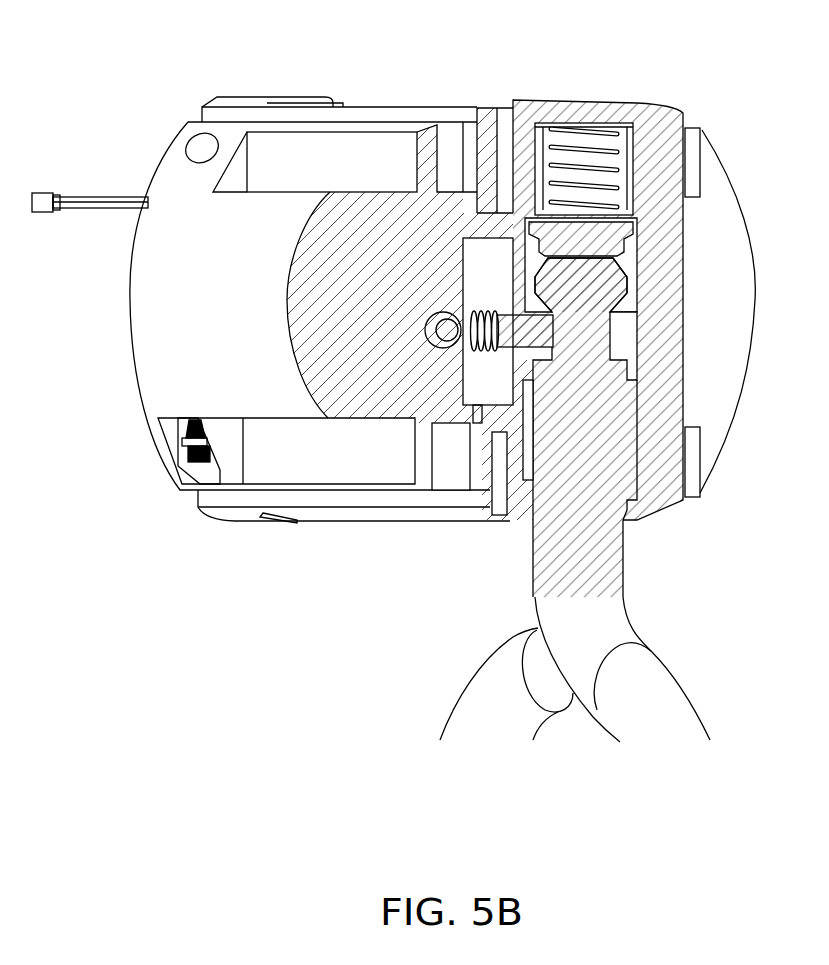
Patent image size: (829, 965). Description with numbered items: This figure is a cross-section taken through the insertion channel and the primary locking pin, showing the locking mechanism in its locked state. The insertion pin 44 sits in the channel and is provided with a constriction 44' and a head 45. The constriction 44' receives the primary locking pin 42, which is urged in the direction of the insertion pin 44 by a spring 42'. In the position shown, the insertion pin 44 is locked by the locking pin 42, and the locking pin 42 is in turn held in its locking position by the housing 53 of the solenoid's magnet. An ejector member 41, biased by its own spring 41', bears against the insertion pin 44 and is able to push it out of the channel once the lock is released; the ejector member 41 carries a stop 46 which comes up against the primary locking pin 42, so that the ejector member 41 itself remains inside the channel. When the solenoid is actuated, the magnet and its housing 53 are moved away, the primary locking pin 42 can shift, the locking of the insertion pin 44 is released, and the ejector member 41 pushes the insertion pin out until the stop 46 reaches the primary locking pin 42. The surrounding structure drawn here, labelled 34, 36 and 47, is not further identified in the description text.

The housing lower portion 34 is at (372, 345).
The housing 36 is at (405, 265).
The ejector member 41 is at (646, 334).
The spring 41' is at (612, 120).
The primary locking pin 42 is at (478, 439).
The spring 42' is at (426, 434).
The insertion pin 44 is at (624, 493).
The constriction 44' is at (514, 468).
The head 45 is at (477, 108).
The stop 46 is at (543, 263).
The hand / outer ring 47 is at (757, 280).
The housing 53 is at (438, 330).